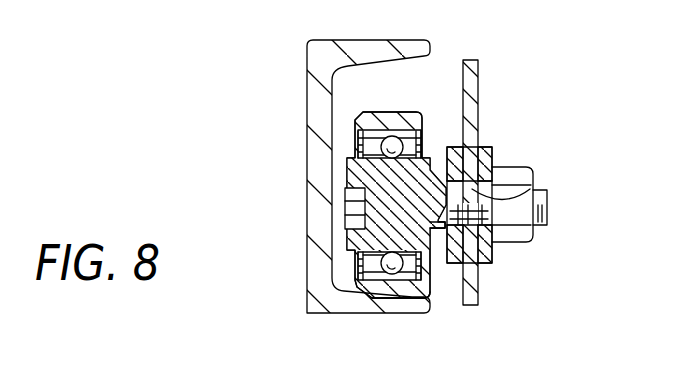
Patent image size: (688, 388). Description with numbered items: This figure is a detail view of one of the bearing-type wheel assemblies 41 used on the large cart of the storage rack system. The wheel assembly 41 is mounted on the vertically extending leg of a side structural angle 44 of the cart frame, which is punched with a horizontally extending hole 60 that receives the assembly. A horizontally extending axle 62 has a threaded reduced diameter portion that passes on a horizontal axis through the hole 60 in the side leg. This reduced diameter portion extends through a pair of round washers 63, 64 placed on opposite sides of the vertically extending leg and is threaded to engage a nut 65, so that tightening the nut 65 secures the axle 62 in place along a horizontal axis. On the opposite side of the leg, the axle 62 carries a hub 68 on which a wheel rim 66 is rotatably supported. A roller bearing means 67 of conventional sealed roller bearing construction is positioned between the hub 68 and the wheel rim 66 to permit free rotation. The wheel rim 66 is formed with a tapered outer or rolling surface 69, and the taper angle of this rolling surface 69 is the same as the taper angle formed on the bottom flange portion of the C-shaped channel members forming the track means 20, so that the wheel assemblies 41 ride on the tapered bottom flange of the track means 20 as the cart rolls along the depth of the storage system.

The track means 20 is at (318, 99).
The wheel assembly 41 is at (355, 139).
The side structural angle 44 is at (470, 62).
The hole 60 is at (547, 190).
The axle 62 is at (441, 150).
The round washer 63 is at (457, 146).
The round washer 64 is at (482, 147).
The nut 65 is at (517, 175).
The wheel rim 66 is at (391, 112).
The roller bearing means 67 is at (378, 128).
The hub 68 is at (436, 235).
The rolling surface 69 is at (408, 300).